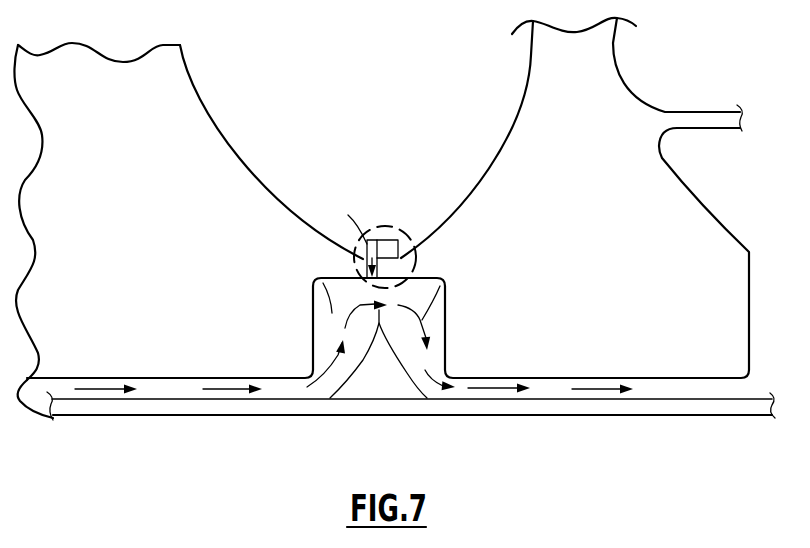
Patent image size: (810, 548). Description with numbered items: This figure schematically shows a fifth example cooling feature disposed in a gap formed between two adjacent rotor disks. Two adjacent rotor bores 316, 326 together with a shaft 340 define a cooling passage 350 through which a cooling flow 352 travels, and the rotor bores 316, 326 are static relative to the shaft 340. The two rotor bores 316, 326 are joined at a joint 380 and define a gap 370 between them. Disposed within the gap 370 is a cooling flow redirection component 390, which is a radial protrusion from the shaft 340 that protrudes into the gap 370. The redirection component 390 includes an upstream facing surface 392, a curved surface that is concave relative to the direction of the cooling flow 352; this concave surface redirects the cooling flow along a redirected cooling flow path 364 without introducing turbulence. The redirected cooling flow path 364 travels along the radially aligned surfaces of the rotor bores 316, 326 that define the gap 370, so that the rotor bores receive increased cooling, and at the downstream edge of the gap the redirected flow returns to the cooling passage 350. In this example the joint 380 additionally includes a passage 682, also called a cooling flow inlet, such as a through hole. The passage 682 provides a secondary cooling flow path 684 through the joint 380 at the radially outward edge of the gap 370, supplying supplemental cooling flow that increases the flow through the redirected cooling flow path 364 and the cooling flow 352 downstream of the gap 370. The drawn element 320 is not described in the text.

The rotor bore 316 is at (170, 269).
The rotor bore 326 is at (615, 270).
The cavity housing 320 is at (320, 278).
The joint 380 is at (414, 240).
The secondary cooling flow path 684 is at (367, 240).
The passage 682 is at (385, 252).
The gap 370 is at (342, 293).
The redirected cooling flow path 364 is at (442, 283).
The upstream facing surface 392 is at (349, 377).
The cooling flow redirection component 390 is at (387, 380).
The cooling passage 350 is at (152, 390).
The shaft 340 is at (165, 407).
The cooling flow 352 is at (217, 388).